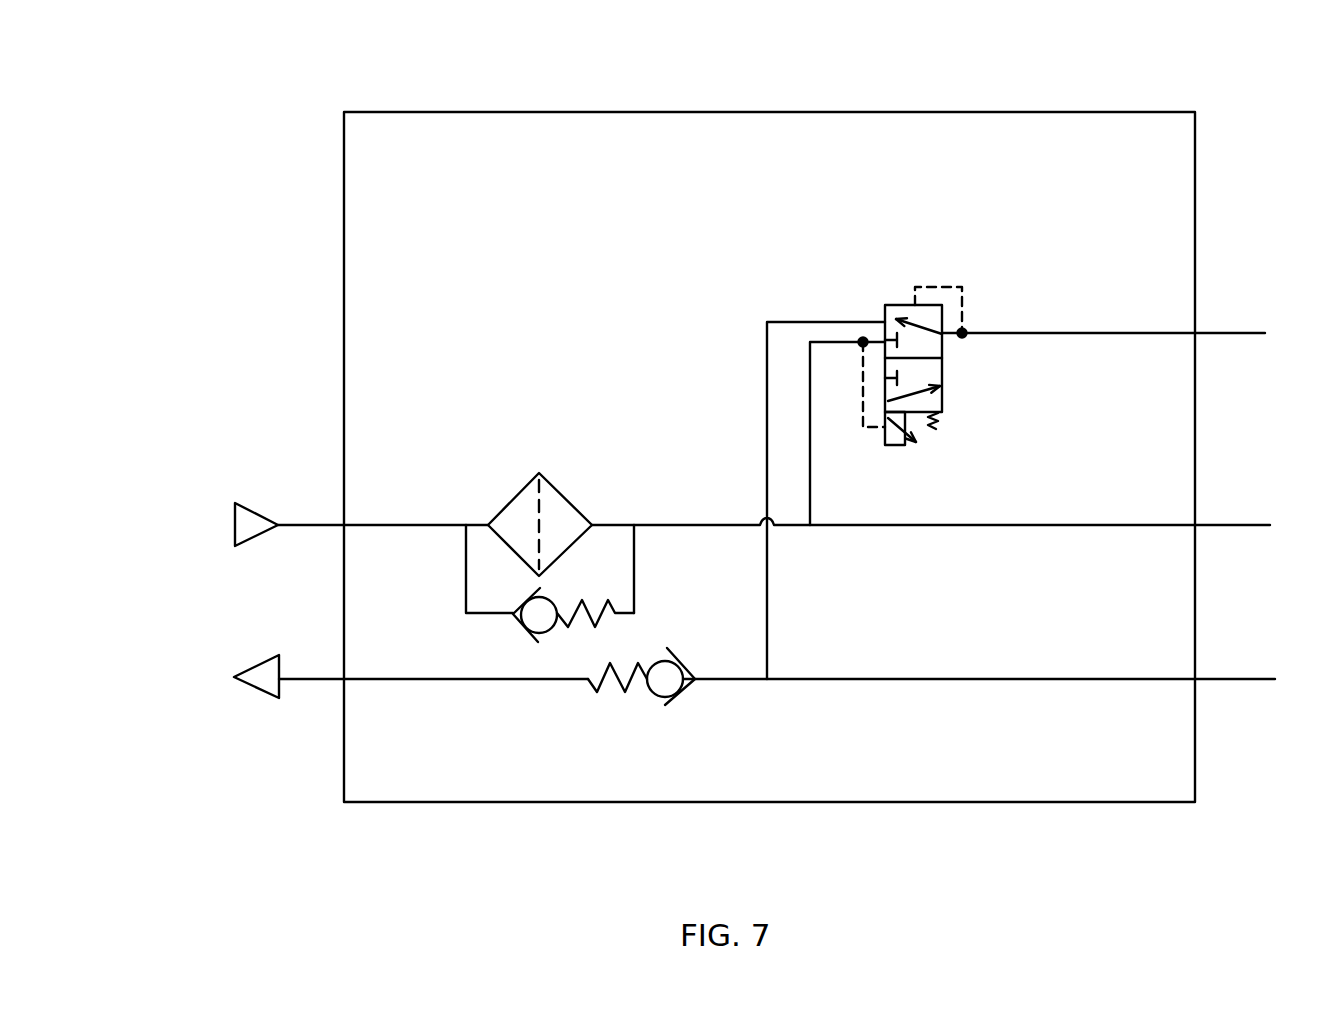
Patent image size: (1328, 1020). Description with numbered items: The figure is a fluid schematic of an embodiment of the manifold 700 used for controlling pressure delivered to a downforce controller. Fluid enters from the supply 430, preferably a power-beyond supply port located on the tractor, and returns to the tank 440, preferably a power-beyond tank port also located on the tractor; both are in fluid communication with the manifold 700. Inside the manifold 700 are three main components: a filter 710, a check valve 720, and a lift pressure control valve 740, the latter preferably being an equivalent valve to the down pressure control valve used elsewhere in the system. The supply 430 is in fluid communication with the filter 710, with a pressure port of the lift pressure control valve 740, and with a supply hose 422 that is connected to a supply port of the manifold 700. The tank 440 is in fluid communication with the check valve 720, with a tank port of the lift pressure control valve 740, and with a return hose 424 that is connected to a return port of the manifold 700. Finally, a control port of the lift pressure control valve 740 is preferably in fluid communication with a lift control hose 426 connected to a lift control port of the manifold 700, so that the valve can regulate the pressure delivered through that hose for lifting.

The manifold 700 is at (268, 174).
The filter 710 is at (502, 450).
The check valve 720 is at (657, 722).
The lift pressure control valve 740 is at (858, 280).
The supply 430 is at (255, 508).
The tank 440 is at (267, 692).
The supply hose 422 is at (1215, 525).
The return hose 424 is at (1222, 679).
The lift control hose 426 is at (1222, 333).